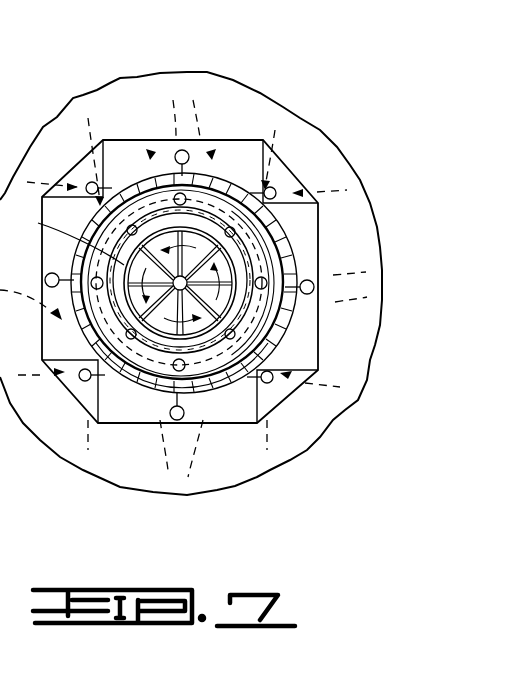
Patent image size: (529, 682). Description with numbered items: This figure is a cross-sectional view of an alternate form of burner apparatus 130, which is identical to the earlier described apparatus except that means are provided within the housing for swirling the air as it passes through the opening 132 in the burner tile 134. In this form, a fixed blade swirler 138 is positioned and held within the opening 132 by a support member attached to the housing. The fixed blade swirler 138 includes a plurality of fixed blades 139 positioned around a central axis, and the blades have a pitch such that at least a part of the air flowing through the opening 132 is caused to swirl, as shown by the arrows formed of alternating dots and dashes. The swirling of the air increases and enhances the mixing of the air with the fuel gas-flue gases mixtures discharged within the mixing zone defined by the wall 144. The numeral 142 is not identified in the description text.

The burner apparatus 130 is at (262, 82).
The opening 132 is at (132, 225).
The burner tile 134 is at (318, 236).
The fixed blade swirler 138 is at (235, 320).
The fixed blades 139 is at (65, 237).
The shroud ring 142 is at (276, 269).
The wall 144 is at (268, 220).